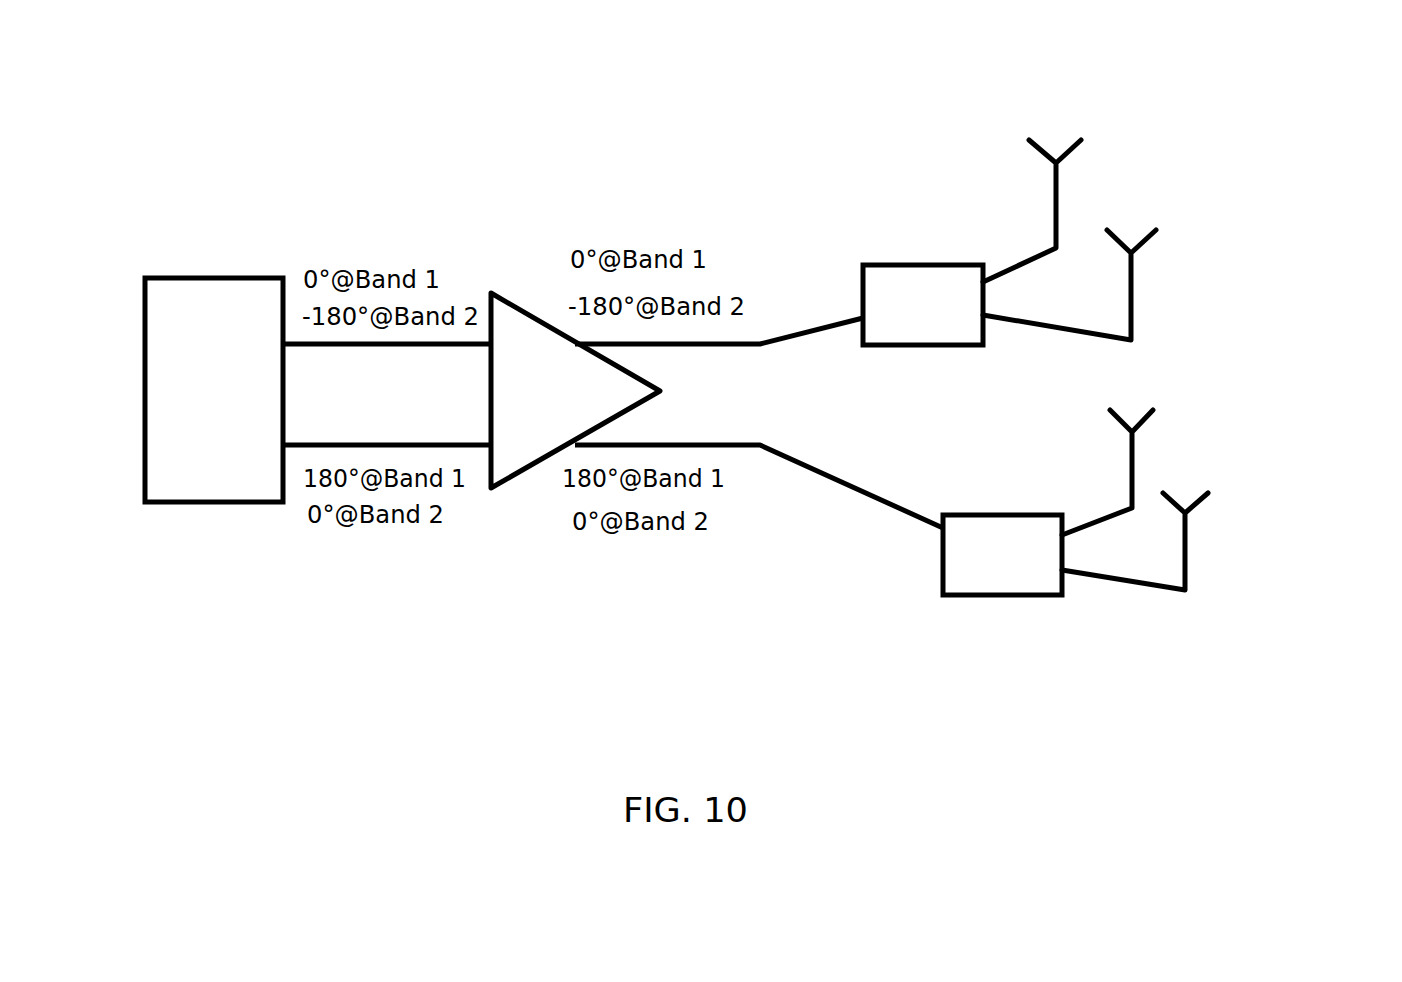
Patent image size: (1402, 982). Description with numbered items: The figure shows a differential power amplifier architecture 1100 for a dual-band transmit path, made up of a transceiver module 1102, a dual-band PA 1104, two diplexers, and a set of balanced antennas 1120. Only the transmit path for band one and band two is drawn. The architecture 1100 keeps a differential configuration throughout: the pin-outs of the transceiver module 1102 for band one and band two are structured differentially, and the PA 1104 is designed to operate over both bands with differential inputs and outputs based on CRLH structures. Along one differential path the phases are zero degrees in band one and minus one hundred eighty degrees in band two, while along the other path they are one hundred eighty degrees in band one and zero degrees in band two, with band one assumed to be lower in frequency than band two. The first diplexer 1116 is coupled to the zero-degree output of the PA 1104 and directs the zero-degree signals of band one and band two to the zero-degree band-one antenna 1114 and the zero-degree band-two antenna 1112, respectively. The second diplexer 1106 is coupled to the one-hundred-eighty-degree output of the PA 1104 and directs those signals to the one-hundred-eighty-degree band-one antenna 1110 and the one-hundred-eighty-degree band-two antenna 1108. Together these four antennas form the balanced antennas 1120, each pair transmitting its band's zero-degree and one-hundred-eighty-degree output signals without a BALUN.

The differential power amplifier architecture 1100 is at (247, 123).
The transceiver module 1102 is at (185, 496).
The PA 1104 is at (510, 483).
The diplexer 2 1106 is at (978, 600).
The 180° band 2 antenna 1108 is at (1216, 578).
The 180° band 1 antenna 1110 is at (1227, 445).
The 0° band 2 antenna 1112 is at (1165, 257).
The 0° band 1 antenna 1114 is at (1060, 177).
The diplexer 1 1116 is at (897, 267).
The balanced antennas 1120 is at (1167, 757).